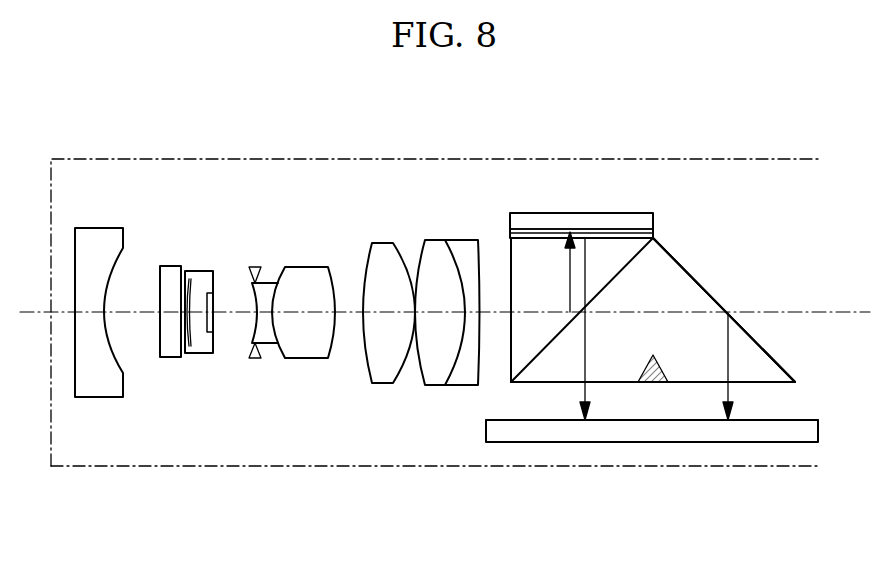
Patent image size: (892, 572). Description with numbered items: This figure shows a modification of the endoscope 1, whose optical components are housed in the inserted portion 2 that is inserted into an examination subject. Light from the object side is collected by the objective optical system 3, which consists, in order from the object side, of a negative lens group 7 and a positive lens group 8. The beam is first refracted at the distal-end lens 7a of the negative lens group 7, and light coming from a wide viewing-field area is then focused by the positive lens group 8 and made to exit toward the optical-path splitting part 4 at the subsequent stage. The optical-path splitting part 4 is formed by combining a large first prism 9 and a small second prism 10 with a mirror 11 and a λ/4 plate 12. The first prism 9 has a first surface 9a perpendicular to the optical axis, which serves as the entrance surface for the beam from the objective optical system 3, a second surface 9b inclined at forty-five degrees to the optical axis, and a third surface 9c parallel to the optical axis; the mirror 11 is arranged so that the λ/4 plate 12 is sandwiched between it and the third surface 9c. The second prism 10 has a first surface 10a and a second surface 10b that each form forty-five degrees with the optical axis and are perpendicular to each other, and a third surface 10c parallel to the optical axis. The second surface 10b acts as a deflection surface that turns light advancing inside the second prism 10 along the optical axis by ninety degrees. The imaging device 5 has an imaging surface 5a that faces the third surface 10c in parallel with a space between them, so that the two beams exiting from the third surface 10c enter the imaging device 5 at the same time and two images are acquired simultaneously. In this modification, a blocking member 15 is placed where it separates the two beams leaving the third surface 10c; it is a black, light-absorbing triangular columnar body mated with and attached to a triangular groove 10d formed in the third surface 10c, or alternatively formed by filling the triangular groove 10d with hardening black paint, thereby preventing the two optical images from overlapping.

The endoscope 1 is at (594, 110).
The inserted portion 2 is at (711, 158).
The objective optical system 3 is at (320, 398).
The optical-path splitting part 4 is at (714, 224).
The imaging device 5 is at (666, 440).
The imaging surface 5a is at (800, 420).
The negative lens group 7 is at (193, 392).
The distal-end lens 7a is at (97, 397).
The positive lens group 8 is at (348, 410).
The first prism 9 is at (615, 274).
The first surface 9a is at (508, 263).
The second surface 9b is at (619, 275).
The third surface 9c is at (637, 234).
The second prism 10 is at (623, 327).
The first surface 10a is at (533, 367).
The second surface 10b is at (708, 288).
The third surface 10c is at (785, 388).
The triangular groove 10d is at (666, 372).
The mirror 11 is at (535, 240).
The λ/4 plate 12 is at (599, 228).
The blocking member 15 is at (653, 385).